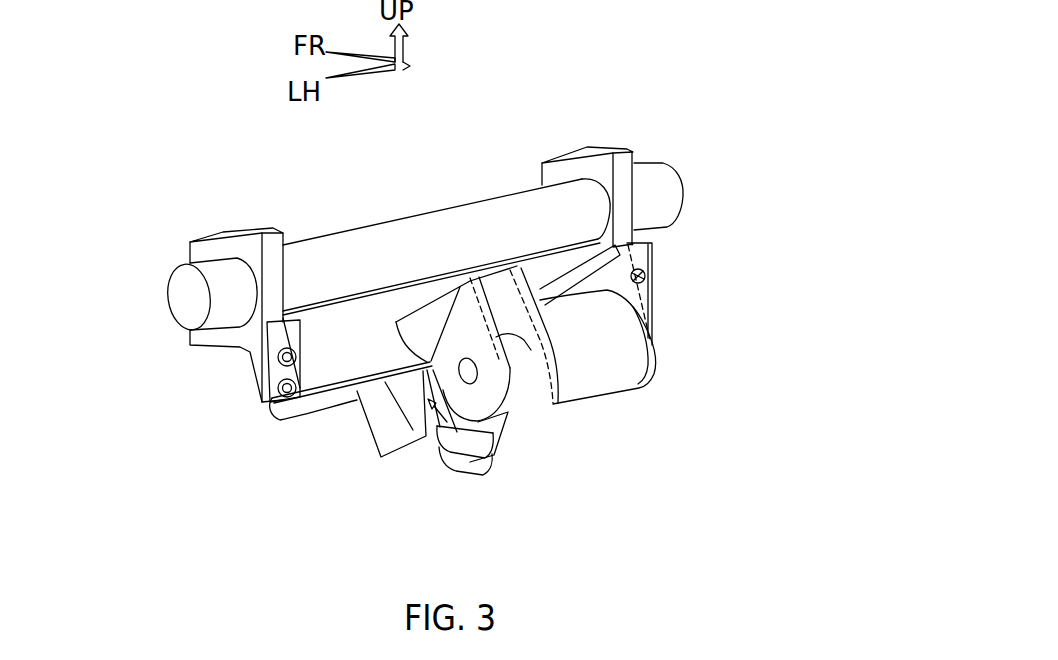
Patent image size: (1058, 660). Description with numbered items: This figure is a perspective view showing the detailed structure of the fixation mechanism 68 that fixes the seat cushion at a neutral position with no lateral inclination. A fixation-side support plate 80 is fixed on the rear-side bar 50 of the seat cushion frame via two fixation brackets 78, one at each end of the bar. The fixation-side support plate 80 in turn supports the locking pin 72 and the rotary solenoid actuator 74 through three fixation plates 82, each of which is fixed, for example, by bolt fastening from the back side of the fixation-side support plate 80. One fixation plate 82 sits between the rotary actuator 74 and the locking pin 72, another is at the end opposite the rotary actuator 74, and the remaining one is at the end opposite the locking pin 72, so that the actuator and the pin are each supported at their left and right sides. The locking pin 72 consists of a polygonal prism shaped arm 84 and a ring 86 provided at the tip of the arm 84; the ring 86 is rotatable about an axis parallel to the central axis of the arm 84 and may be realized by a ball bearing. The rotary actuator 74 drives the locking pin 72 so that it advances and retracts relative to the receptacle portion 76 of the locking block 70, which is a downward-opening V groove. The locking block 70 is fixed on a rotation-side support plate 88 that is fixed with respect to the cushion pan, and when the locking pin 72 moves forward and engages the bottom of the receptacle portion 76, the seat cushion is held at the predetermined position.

The rear-side bar 50 is at (477, 223).
The fixation mechanism 68 is at (595, 482).
The locking block 70 is at (358, 458).
The locking pin 72 is at (511, 476).
The rotary solenoid actuator 74 is at (613, 373).
The receptacle portion 76 is at (401, 452).
The fixation bracket 78 is at (277, 241).
The fixation-side support plate 80 is at (343, 322).
The fixation plate 82 is at (647, 345).
The arm 84 is at (488, 452).
The ring 86 is at (438, 441).
The rotation-side support plate 88 is at (320, 418).